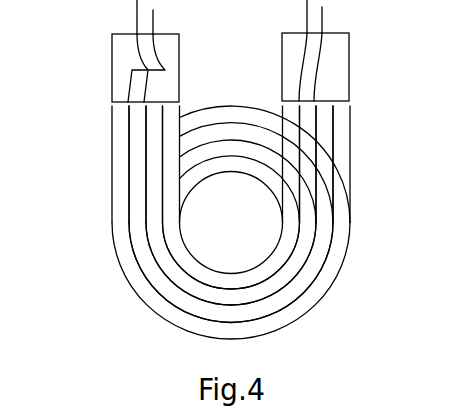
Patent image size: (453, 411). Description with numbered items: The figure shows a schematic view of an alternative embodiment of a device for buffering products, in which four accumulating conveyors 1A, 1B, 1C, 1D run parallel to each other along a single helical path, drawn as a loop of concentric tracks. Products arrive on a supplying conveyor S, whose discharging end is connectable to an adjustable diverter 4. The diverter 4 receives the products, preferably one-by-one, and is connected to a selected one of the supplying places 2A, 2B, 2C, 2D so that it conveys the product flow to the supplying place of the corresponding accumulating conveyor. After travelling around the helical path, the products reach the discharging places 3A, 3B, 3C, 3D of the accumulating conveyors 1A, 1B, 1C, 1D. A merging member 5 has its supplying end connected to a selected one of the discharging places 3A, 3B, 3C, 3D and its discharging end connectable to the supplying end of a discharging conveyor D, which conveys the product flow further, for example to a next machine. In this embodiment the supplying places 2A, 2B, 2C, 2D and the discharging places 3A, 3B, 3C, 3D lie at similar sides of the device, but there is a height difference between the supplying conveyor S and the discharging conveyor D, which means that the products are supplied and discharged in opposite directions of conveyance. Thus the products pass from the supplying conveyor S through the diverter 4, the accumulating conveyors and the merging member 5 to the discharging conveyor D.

The supplying conveyor S is at (143, 25).
The discharging conveyor D is at (317, 22).
The adjustable diverter 4 is at (123, 58).
The merging member 5 is at (338, 62).
The accumulating conveyor 1A is at (333, 260).
The accumulating conveyor 1B is at (307, 277).
The accumulating conveyor 1C is at (162, 260).
The accumulating conveyor 1D is at (193, 268).
The supplying place 2A is at (122, 120).
The supplying place 2B is at (138, 130).
The supplying place 2C is at (152, 140).
The supplying place 2D is at (167, 160).
The discharging place 3A is at (345, 172).
The discharging place 3B is at (325, 142).
The discharging place 3C is at (308, 124).
The discharging place 3D is at (292, 116).